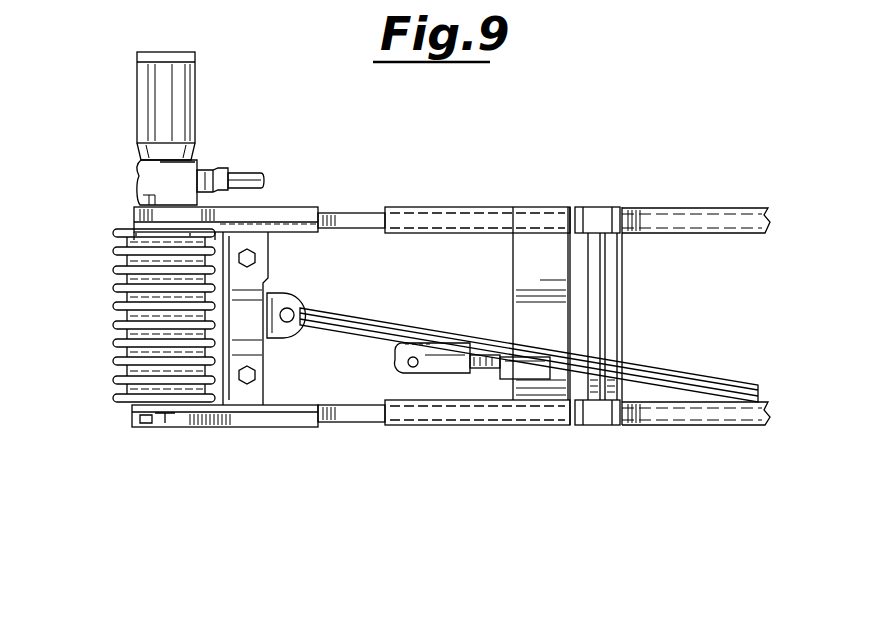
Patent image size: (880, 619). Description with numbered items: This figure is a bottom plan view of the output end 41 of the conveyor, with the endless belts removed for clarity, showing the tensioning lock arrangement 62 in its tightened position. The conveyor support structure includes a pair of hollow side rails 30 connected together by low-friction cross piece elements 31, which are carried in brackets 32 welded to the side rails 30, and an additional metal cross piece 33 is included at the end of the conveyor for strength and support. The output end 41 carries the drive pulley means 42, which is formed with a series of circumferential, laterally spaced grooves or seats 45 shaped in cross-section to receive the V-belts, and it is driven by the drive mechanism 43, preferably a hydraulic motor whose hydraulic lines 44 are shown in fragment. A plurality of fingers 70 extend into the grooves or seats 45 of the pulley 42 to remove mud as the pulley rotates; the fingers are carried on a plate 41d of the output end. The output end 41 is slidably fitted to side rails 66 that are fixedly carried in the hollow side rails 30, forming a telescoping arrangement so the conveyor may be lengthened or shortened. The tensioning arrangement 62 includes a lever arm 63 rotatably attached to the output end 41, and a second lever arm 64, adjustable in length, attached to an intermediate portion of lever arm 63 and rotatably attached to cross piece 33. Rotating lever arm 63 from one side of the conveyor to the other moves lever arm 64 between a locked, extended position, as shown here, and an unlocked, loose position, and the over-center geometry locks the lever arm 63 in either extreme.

The side rails 30 is at (675, 215).
The cross piece elements 31 is at (613, 302).
The brackets 32 is at (600, 215).
The metal cross pieces 33 is at (527, 270).
The output end 41 is at (111, 455).
The base plate 41d is at (245, 393).
The drive pulley means 42 is at (117, 306).
The drive mechanism 43 is at (190, 120).
The hydraulic lines 44 is at (243, 178).
The grooves or seats 45 is at (122, 370).
The tensioning arrangement 62 is at (461, 308).
The lever arm 63 is at (680, 367).
The lever arm 64 is at (465, 378).
The side rails 66 is at (355, 215).
The fingers 70 is at (205, 372).